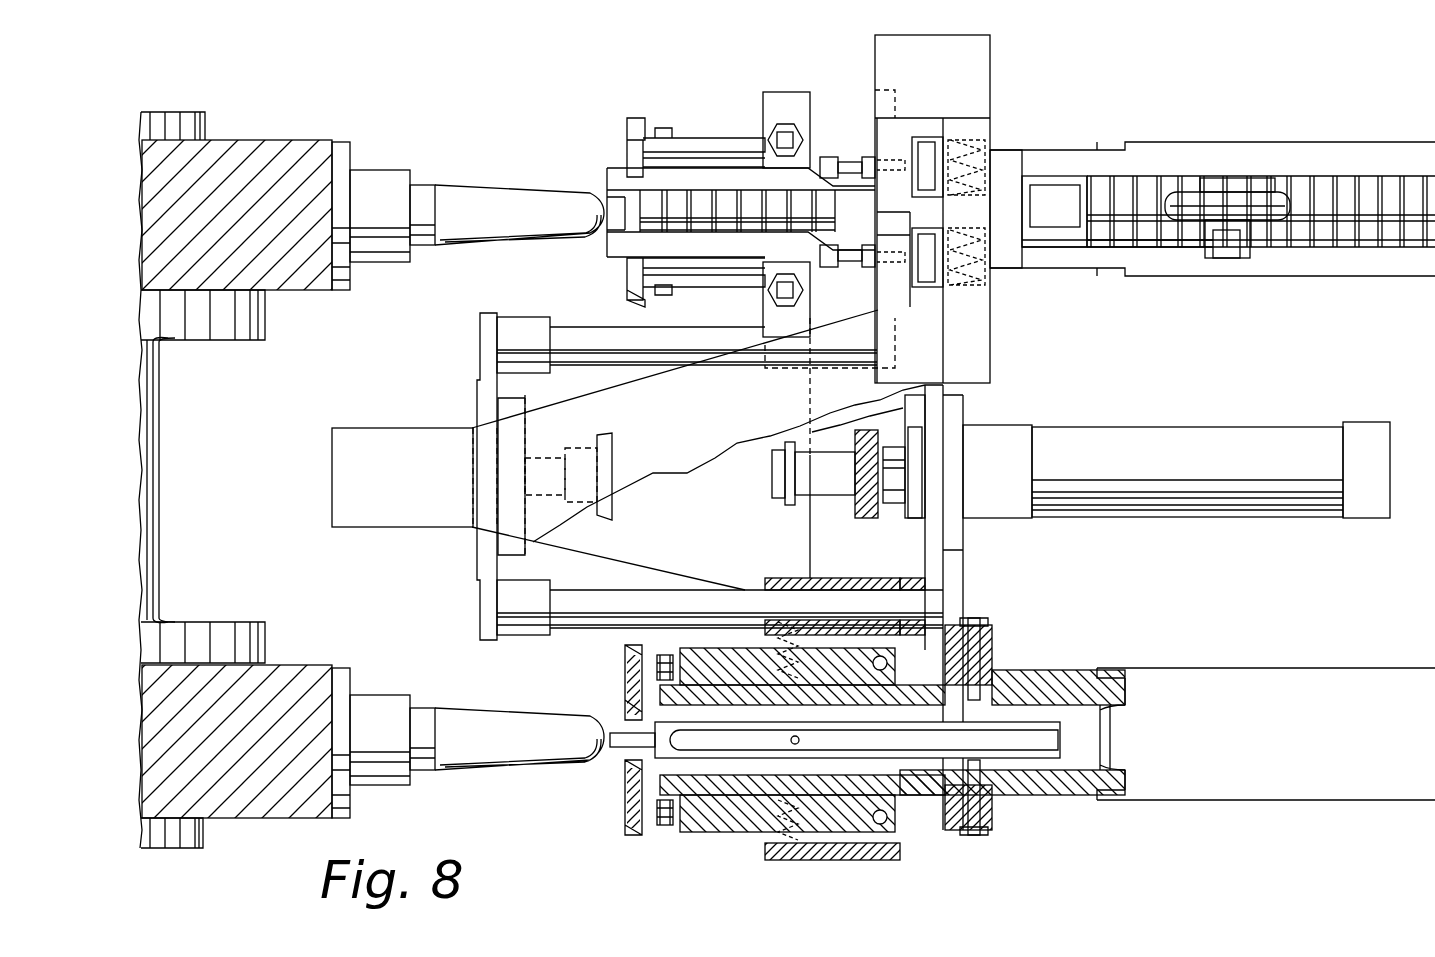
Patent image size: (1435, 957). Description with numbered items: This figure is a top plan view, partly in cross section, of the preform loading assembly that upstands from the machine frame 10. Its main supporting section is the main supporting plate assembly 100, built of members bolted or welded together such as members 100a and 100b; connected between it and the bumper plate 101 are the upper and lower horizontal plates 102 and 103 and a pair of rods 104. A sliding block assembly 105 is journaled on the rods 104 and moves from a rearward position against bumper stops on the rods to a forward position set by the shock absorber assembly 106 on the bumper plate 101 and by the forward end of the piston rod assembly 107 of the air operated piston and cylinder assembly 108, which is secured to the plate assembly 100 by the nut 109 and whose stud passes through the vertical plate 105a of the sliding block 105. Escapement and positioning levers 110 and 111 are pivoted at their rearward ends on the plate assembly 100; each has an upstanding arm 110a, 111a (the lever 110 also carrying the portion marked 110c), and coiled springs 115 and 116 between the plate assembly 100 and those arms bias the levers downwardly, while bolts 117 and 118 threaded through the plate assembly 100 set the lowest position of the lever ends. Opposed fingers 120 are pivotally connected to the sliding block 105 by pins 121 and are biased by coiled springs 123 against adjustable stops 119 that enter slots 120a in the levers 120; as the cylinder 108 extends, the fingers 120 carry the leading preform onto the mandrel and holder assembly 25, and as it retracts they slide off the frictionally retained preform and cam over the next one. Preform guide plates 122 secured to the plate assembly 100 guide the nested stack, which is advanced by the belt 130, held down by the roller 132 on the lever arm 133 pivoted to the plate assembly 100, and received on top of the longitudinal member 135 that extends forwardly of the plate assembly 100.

The frame 10 is at (170, 425).
The mandrel and holder assembly 25 is at (378, 166).
The main supporting plate assembly 100 is at (945, 568).
The member of main supporting plate assembly 100a is at (960, 822).
The member of main supporting plate assembly 100b is at (992, 662).
The bumper plate 101 is at (477, 400).
The upper horizontal plate 102 is at (665, 416).
The lower horizontal plate 103 is at (696, 521).
The rods 104 is at (596, 327).
The sliding block assembly 105 is at (808, 538).
The vertical plate 105a is at (845, 525).
The shock absorber assembly 106 is at (332, 437).
The piston rod assembly 107 is at (793, 500).
The air operated piston and cylinder assembly 108 is at (1216, 425).
The nut 109 is at (885, 503).
The escapement and positioning lever 110 is at (608, 175).
The upstanding arm 110a is at (928, 140).
The jaw block 110c is at (990, 328).
The escapement and positioning lever 111 is at (608, 242).
The upstanding arm 111a is at (925, 270).
The coiled spring 115 is at (985, 140).
The coiled spring 116 is at (985, 285).
The bolt 117 is at (846, 158).
The bolt 118 is at (845, 267).
The adjustable stop 119 is at (768, 138).
The lever arm 120 is at (627, 130).
The slot 120a is at (690, 690).
The pin 121 is at (873, 663).
The preform guide plate 122 is at (660, 655).
The coiled spring 123 is at (778, 642).
The belt 130 is at (1318, 276).
The roller 132 is at (1255, 190).
The lever arm 133 is at (1165, 247).
The longitudinal member 135 is at (1010, 760).